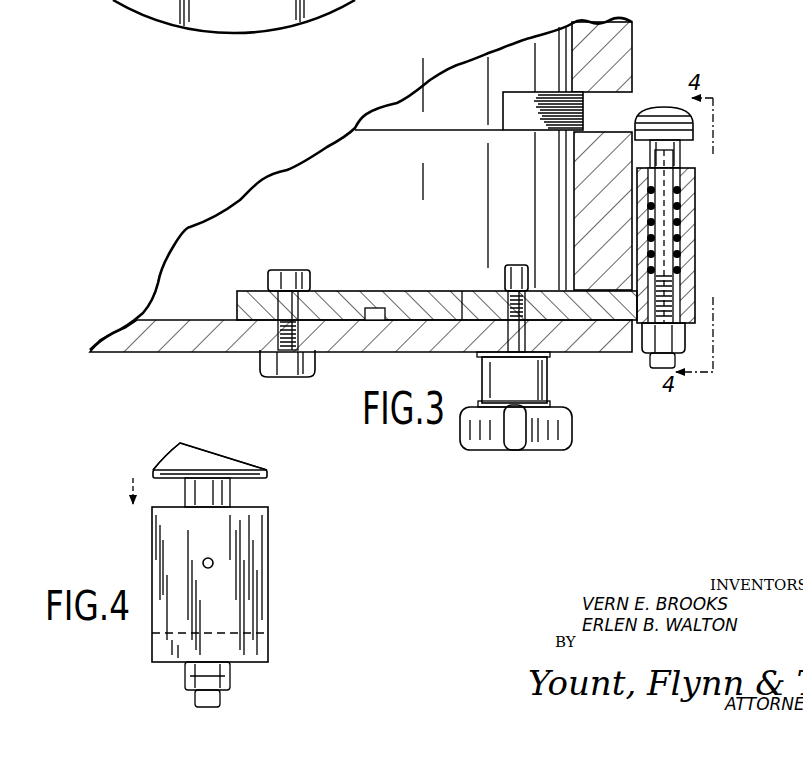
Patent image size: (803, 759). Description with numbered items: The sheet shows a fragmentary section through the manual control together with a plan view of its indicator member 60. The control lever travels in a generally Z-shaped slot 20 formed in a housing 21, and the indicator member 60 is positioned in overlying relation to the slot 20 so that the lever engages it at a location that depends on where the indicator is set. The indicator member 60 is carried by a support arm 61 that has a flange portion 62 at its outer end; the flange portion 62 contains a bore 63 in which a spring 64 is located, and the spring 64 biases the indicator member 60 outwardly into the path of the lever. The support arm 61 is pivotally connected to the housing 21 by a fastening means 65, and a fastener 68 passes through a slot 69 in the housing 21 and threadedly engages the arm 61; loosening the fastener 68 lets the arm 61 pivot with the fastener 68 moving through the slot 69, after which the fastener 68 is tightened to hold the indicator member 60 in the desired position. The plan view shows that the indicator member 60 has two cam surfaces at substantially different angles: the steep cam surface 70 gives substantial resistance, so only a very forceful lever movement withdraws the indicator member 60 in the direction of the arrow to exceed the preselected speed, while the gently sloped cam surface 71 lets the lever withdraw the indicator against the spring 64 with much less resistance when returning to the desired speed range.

In FIG. 3, the slot 20 is at (585, 94).
In FIG. 3, the housing 21 is at (400, 352).
In FIG. 3, the indicator member 60 is at (675, 82).
In FIG. 4, the indicator member 60 is at (185, 445).
In FIG. 3, the support arm 61 is at (590, 310).
In FIG. 3, the flange portion 62 is at (690, 205).
In FIG. 4, the flange portion 62 is at (268, 578).
In FIG. 3, the bore 63 is at (680, 192).
In FIG. 3, the spring 64 is at (680, 228).
In FIG. 3, the fastening means 65 is at (290, 370).
In FIG. 3, the fastener 68 is at (572, 428).
In FIG. 3, the slot 69 is at (506, 330).
In FIG. 4, the cam surface 70 is at (162, 460).
In FIG. 4, the cam surface 71 is at (232, 462).